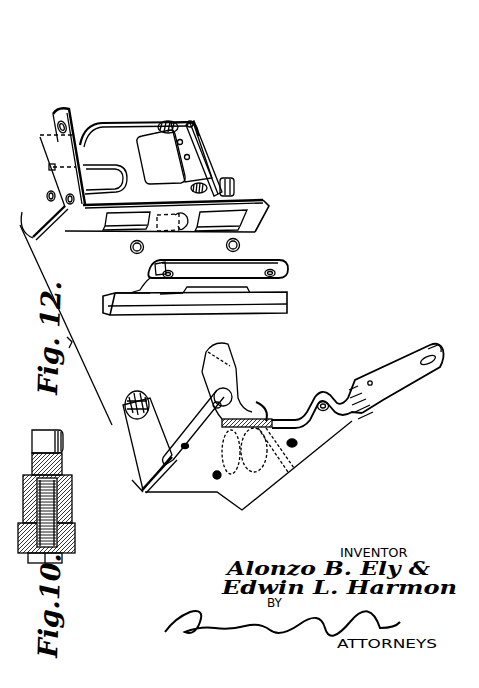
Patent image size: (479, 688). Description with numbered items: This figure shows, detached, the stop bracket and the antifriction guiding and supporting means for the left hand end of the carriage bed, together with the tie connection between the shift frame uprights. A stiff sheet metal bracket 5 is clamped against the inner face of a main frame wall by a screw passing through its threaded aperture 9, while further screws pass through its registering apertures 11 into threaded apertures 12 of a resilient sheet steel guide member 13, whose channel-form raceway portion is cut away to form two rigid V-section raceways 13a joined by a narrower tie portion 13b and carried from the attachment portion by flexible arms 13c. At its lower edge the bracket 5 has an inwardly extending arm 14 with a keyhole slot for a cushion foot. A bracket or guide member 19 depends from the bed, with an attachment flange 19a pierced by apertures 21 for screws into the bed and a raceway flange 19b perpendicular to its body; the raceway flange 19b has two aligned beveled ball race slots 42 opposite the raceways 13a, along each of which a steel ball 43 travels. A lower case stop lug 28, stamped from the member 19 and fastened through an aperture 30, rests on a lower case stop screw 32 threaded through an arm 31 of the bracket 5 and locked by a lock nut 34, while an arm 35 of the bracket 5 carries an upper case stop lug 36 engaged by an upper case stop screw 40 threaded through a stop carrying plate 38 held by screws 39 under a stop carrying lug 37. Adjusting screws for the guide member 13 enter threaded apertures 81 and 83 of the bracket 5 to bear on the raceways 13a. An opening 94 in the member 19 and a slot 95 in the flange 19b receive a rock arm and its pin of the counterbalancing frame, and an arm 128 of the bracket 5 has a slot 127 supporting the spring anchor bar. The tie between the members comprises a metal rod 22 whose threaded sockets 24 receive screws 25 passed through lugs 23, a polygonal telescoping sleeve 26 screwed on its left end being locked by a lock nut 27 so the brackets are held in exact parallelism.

In FIG. 12, the sheet metal bracket 5 is at (262, 492).
In FIG. 12, the threaded aperture 9 is at (217, 481).
In FIG. 12, the registering apertures 11 is at (215, 412).
In FIG. 12, the threaded apertures 12 is at (173, 275).
In FIG. 12, the shift-frame-guide member 13 is at (262, 260).
In FIG. 12, the raceways 13a is at (137, 308).
In FIG. 12, the tie portion 13b is at (198, 303).
In FIG. 12, the resilient arm 13c is at (130, 292).
In FIG. 12, the arm 14 is at (270, 417).
In FIG. 12, the bracket or guide member 19 is at (110, 126).
In FIG. 12, the attachment flange 19a is at (77, 150).
In FIG. 12, the raceway flange 19b is at (84, 218).
In FIG. 12, the apertures 21 is at (58, 123).
In FIG. 10, the metal rod 22 is at (35, 443).
In FIG. 10, the lugs 23 is at (77, 550).
In FIG. 10, the threaded sockets 24 is at (63, 480).
In FIG. 10, the screws 25 is at (63, 553).
In FIG. 10, the telescoping sleeve 26 is at (75, 533).
In FIG. 10, the lock nut 27 is at (72, 507).
In FIG. 12, the lower case stop lug 28 is at (33, 212).
In FIG. 12, the aperture 30 is at (49, 165).
In FIG. 12, the arm 31 is at (143, 492).
In FIG. 12, the lower case stop screw 32 is at (152, 410).
In FIG. 12, the lock nut 34 is at (133, 392).
In FIG. 12, the arm 35 is at (238, 406).
In FIG. 12, the upper case stop lug 36 is at (210, 372).
In FIG. 12, the stop carrying lug 37 is at (161, 157).
In FIG. 12, the stop carrying plate 38 is at (210, 160).
In FIG. 12, the screws 39 is at (189, 121).
In FIG. 12, the upper case stop screw 40 is at (224, 180).
In FIG. 12, the ball race slots 42 is at (108, 176).
In FIG. 12, the steel ball 43 is at (227, 245).
In FIG. 12, the threaded aperture 81 is at (184, 450).
In FIG. 12, the threaded aperture 83 is at (298, 442).
In FIG. 12, the opening 94 is at (158, 266).
In FIG. 12, the slot 95 is at (176, 229).
In FIG. 12, the slot 127 is at (427, 367).
In FIG. 12, the arm 128 is at (390, 388).